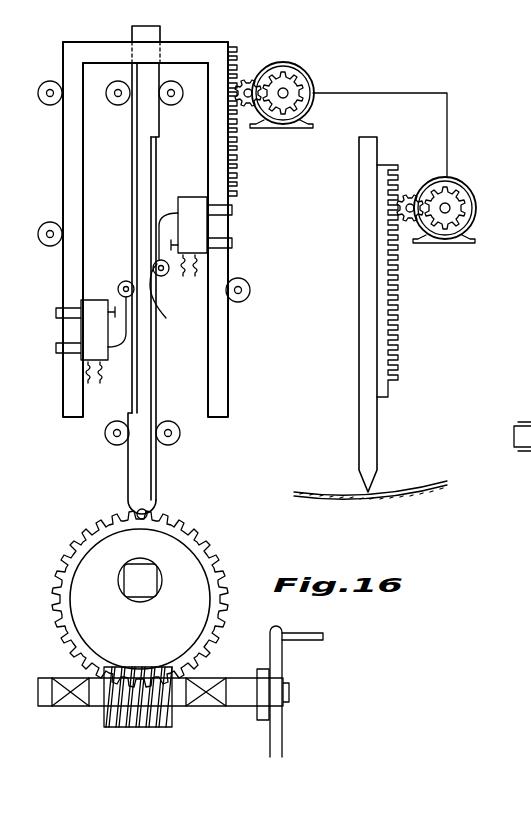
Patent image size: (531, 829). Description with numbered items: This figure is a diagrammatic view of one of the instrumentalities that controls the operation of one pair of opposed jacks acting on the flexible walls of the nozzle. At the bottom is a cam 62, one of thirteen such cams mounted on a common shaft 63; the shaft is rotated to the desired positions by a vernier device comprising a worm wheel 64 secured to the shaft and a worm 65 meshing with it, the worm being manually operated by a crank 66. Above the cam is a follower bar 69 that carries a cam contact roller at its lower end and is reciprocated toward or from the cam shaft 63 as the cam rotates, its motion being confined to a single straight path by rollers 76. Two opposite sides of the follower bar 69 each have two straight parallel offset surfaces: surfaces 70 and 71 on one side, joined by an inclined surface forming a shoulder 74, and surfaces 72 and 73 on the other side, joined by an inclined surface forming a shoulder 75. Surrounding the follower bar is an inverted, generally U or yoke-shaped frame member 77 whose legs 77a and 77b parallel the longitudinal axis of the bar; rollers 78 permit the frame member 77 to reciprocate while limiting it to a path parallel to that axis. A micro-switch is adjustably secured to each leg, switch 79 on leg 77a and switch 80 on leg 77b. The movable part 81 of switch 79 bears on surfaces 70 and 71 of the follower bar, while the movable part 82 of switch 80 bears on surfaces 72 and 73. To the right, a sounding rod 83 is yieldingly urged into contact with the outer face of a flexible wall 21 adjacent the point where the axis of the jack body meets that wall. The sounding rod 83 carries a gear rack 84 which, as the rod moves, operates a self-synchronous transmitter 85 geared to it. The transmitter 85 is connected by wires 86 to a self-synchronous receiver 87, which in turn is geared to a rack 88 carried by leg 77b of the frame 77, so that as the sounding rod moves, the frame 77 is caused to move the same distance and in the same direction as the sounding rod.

The flexible wall 21 is at (423, 492).
The cam 62 is at (208, 590).
The common shaft 63 is at (138, 588).
The worm wheel 64 is at (58, 578).
The worm 65 is at (130, 722).
The crank 66 is at (323, 637).
The follower bar 69 is at (152, 30).
The offset surface 70 is at (132, 182).
The offset surface 71 is at (132, 390).
The offset surface 72 is at (152, 190).
The offset surface 73 is at (156, 395).
The shoulder 74 is at (134, 283).
The shoulder 75 is at (173, 268).
The rollers 76 is at (114, 104).
The frame member 77 is at (87, 42).
The leg 77a is at (63, 142).
The leg 77b is at (228, 380).
The rollers 78 is at (42, 100).
The micro-switch 79 is at (85, 341).
The micro-switch 80 is at (201, 236).
The movable part 81 is at (118, 286).
The movable part 82 is at (165, 276).
The sounding rod 83 is at (367, 348).
The gear rack 84 is at (397, 368).
The self-synchronous transmitter 85 is at (478, 218).
The wires 86 is at (418, 93).
The self-synchronous receiver 87 is at (313, 84).
The rack 88 is at (236, 172).